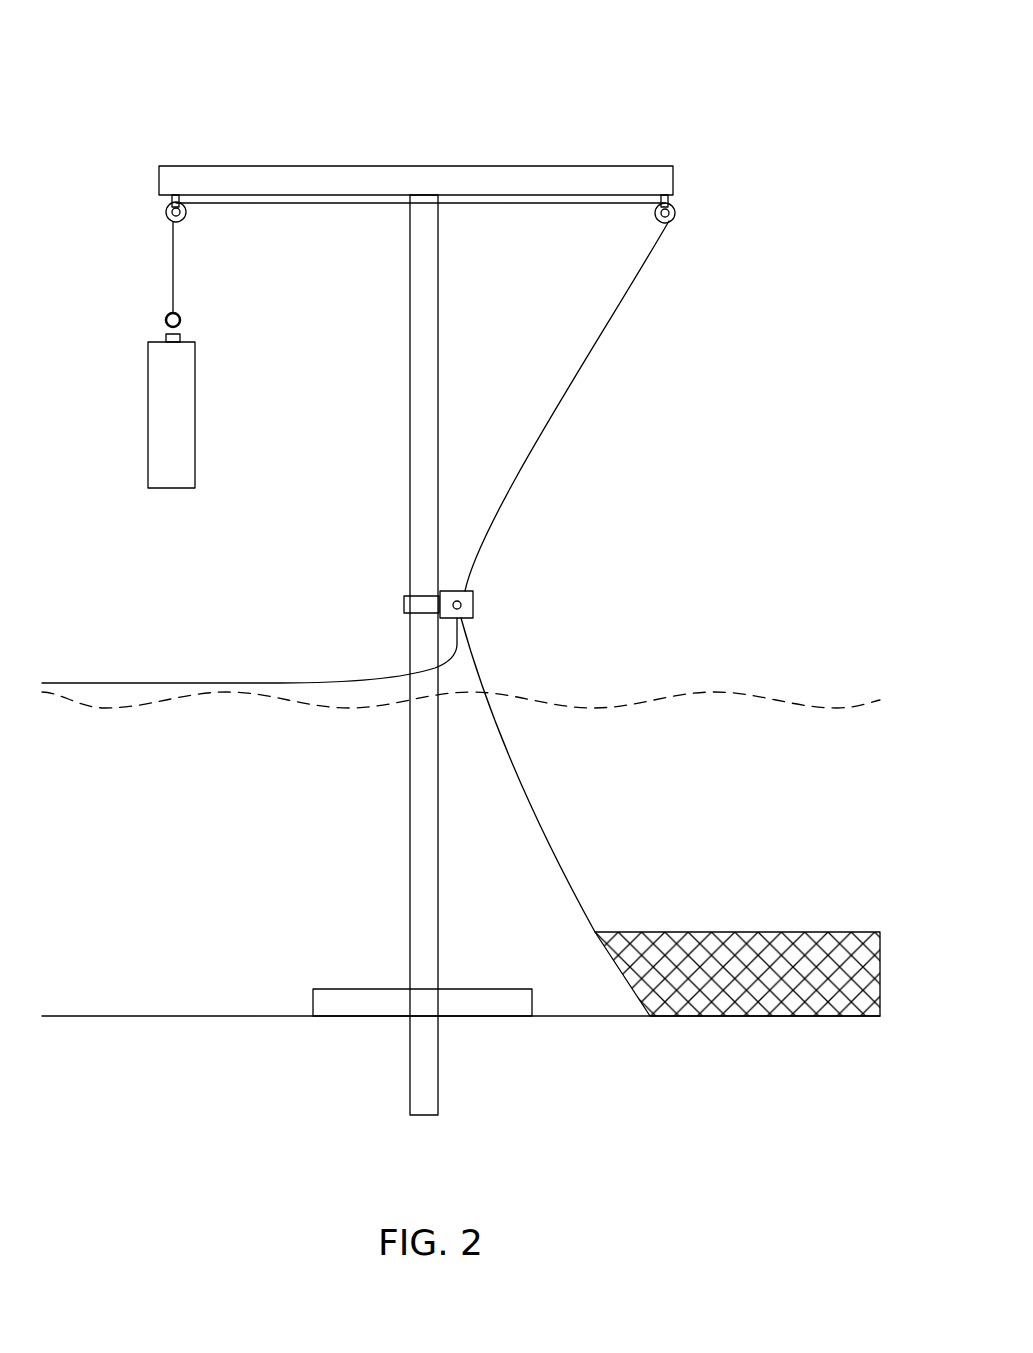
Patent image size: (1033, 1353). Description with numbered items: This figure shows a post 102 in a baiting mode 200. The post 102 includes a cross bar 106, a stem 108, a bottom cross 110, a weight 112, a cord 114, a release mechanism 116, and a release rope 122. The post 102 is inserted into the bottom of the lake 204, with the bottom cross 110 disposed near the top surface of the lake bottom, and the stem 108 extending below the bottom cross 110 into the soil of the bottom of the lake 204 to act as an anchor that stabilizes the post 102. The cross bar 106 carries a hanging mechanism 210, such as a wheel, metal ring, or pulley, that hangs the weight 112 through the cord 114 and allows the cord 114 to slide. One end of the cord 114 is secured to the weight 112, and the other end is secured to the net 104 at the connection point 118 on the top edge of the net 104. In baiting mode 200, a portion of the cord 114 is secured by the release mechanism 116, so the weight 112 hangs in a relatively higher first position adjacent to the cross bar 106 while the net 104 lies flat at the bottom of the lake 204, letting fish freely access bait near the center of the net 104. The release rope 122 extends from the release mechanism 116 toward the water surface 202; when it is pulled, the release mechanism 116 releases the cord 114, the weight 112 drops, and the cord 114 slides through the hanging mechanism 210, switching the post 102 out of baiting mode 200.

The baiting mode 200 is at (220, 85).
The post 102 is at (654, 357).
The net 104 is at (746, 932).
The cross bar 106 is at (503, 166).
The stem 108 is at (440, 338).
The bottom cross 110 is at (352, 989).
The weight 112 is at (196, 389).
The cord 114 is at (553, 407).
The release mechanism 116 is at (474, 600).
The connection point 118 is at (596, 932).
The release rope 122 is at (95, 683).
The water surface 202 is at (690, 690).
The bottom of the lake 204 is at (188, 1016).
The hanging mechanism 210 is at (674, 207).